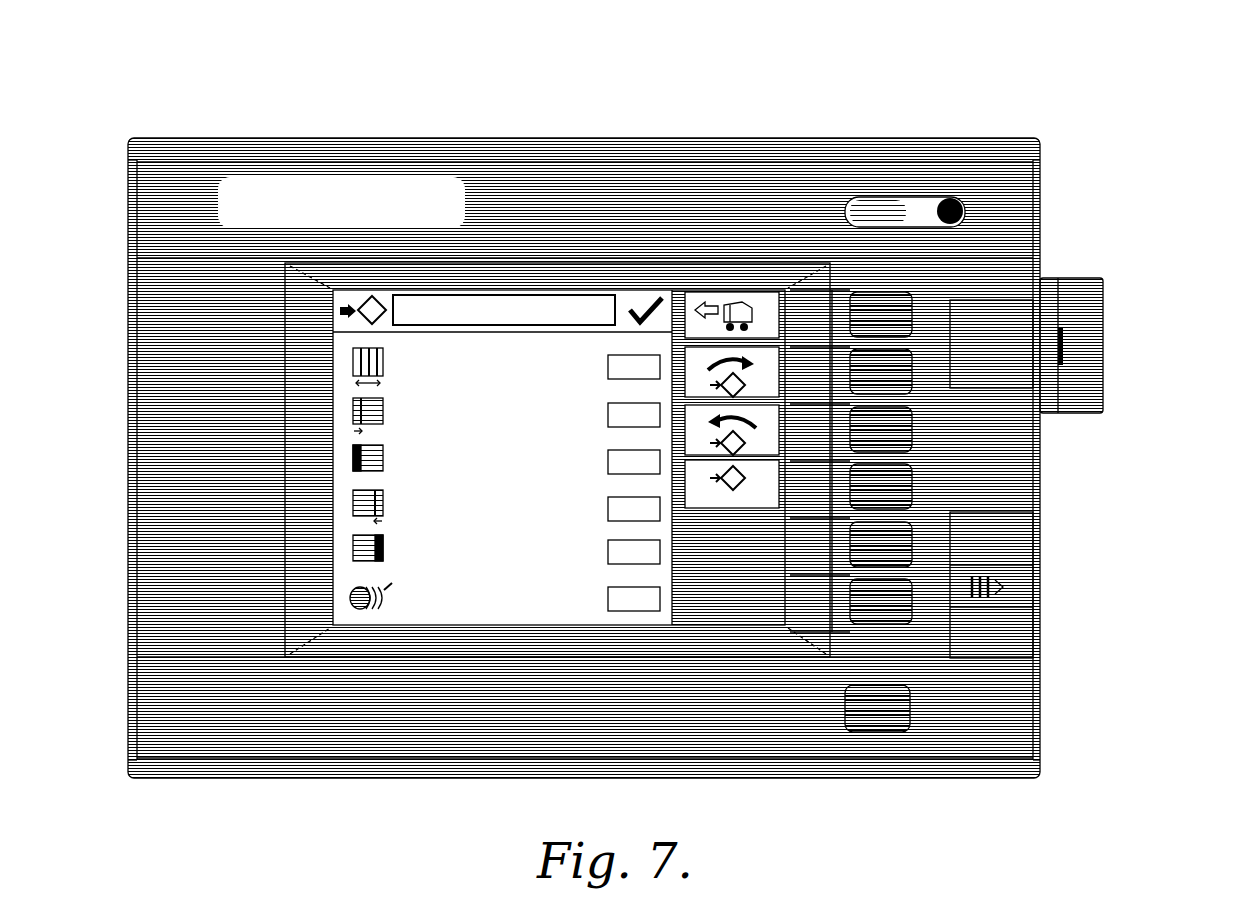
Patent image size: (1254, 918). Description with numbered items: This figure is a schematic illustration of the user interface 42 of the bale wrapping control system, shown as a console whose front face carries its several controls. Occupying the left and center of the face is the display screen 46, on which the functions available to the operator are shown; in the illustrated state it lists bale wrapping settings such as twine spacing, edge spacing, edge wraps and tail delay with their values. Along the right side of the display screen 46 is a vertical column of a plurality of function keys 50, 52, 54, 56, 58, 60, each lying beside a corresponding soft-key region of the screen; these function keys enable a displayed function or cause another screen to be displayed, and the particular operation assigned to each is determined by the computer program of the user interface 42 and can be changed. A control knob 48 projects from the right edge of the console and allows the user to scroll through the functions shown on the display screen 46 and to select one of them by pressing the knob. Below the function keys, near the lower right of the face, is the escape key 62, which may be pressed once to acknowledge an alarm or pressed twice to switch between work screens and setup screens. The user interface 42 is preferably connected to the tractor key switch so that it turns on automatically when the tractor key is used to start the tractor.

The user interface 42 is at (670, 450).
The display screen 46 is at (527, 625).
The control knob 48 is at (1093, 348).
The function key 50 is at (900, 307).
The function key 52 is at (905, 387).
The function key 54 is at (915, 437).
The function key 56 is at (905, 493).
The function key 58 is at (905, 540).
The function key 60 is at (905, 594).
The escape key 62 is at (905, 727).